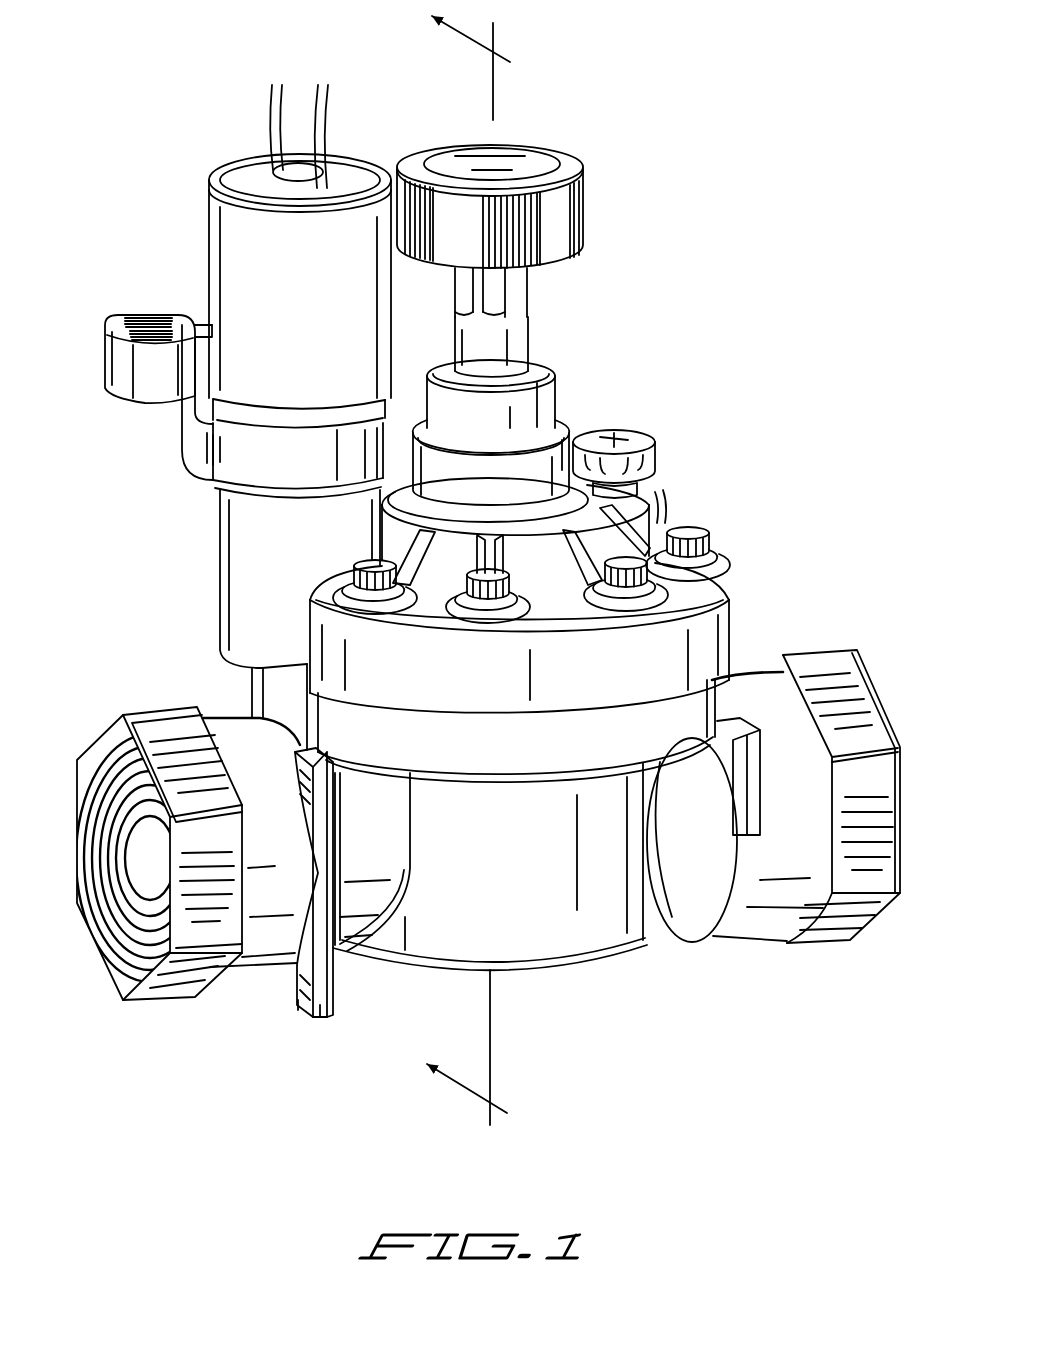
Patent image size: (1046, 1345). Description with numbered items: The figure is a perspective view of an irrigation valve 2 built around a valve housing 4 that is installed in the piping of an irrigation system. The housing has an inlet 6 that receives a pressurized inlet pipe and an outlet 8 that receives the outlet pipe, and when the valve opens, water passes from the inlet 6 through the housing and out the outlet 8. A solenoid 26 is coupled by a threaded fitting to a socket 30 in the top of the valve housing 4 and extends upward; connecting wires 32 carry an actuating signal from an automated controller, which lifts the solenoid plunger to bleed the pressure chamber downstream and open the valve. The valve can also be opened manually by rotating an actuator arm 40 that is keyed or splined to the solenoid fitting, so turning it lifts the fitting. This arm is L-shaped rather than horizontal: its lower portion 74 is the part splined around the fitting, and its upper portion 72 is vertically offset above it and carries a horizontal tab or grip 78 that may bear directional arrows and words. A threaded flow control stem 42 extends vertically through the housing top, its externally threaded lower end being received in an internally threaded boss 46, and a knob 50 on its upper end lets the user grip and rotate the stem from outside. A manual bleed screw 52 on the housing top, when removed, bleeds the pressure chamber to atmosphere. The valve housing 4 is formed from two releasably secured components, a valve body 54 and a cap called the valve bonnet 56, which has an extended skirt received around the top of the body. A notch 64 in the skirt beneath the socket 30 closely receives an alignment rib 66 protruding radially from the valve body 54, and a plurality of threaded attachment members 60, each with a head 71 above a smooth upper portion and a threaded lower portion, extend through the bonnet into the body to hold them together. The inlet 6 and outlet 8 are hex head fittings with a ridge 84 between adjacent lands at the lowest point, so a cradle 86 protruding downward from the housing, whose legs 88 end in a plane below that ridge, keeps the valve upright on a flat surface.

The irrigation valve 2 is at (545, 1127).
The valve housing 4 is at (731, 599).
The inlet 6 is at (833, 670).
The outlet 8 is at (157, 712).
The solenoid 26 is at (205, 202).
The socket 30 is at (232, 573).
The connecting wires 32 is at (322, 98).
The actuator arm 40 is at (124, 390).
The flow control stem 42 is at (523, 292).
The boss 46 is at (527, 452).
The knob 50 is at (557, 160).
The manual bleed screw 52 is at (633, 420).
The valve body 54 is at (609, 929).
The valve bonnet 56 is at (661, 481).
The threaded attachment members 60 is at (706, 517).
The notch 64 is at (289, 621).
The alignment rib 66 is at (260, 683).
The head 71 is at (708, 537).
The upper portion 72 is at (188, 317).
The lower portion 74 is at (210, 478).
The tab or grip 78 is at (130, 316).
The ridge 84 is at (128, 997).
The cradle 86 is at (339, 871).
The leg 88 is at (307, 1015).